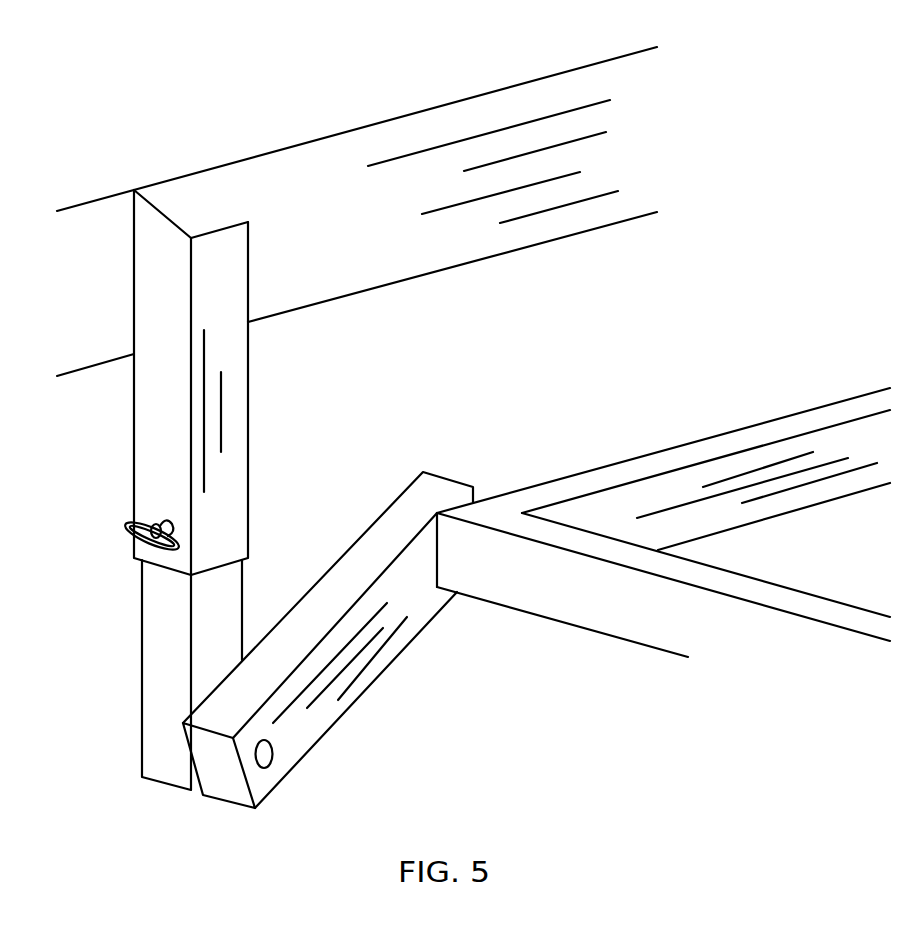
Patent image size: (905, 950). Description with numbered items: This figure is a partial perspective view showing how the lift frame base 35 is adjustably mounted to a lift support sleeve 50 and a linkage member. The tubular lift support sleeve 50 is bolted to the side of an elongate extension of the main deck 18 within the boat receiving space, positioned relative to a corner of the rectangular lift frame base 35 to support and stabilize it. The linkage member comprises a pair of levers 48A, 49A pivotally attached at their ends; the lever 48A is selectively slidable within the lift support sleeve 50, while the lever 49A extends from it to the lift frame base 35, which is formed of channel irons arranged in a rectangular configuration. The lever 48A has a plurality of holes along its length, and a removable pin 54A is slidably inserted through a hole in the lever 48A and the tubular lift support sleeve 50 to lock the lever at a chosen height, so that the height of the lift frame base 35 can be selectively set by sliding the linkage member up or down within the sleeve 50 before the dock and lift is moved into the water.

The main deck 18 is at (350, 130).
The lift support sleeve 50 is at (233, 287).
The lever 48A is at (233, 615).
The lever 49A is at (395, 522).
The removable pin 54A is at (125, 527).
The lift frame base 35 is at (630, 627).